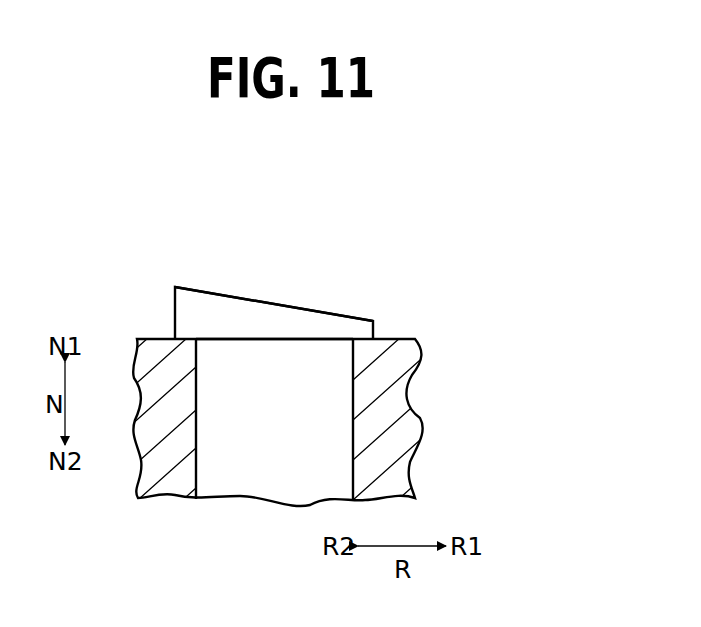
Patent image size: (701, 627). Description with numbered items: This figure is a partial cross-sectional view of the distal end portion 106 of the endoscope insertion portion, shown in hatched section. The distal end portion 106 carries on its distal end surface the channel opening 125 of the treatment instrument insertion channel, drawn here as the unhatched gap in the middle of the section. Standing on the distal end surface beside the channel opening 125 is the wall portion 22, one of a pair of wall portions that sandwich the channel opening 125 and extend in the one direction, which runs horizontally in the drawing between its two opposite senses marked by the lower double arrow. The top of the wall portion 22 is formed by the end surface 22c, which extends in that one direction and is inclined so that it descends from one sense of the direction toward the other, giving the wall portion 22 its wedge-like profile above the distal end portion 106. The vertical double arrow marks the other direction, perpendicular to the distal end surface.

The wall portion 22 is at (193, 322).
The end surface 22c is at (271, 300).
The distal end portion 106 is at (400, 438).
The channel opening 125 is at (278, 343).